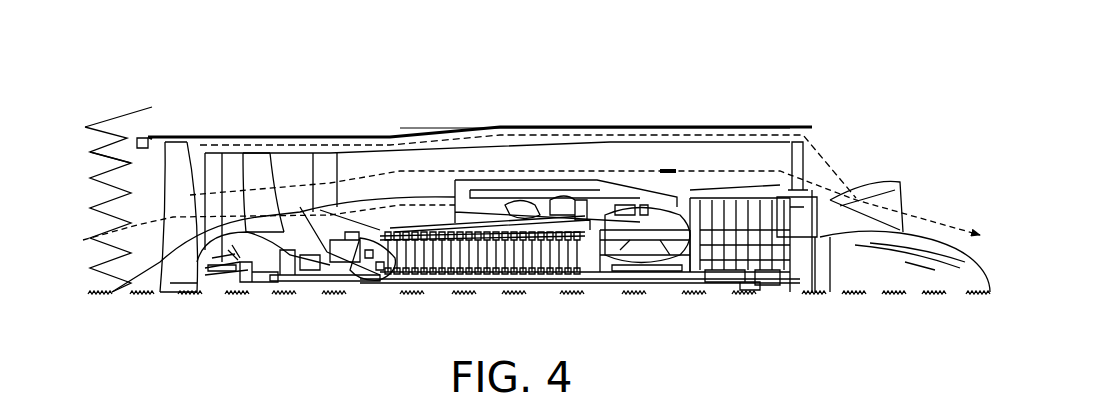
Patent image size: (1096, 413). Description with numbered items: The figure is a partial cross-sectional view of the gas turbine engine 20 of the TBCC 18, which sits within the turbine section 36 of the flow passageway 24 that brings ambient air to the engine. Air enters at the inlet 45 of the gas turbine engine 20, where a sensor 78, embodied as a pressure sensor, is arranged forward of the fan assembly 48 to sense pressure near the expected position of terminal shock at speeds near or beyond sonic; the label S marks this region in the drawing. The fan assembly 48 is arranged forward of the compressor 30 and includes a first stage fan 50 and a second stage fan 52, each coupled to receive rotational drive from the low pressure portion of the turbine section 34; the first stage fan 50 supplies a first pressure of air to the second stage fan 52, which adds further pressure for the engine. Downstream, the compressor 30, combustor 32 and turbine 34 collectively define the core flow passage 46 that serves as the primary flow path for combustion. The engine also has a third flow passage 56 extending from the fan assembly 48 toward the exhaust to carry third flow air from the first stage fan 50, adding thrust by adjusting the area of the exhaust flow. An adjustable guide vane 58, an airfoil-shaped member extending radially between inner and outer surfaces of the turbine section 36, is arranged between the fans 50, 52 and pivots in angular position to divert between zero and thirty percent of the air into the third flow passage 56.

The TBCC 18 is at (932, 100).
The gas turbine engine 20 is at (666, 90).
The flow passageway 24 is at (87, 150).
The spring / inlet section S is at (92, 150).
The compressor section 30 is at (503, 285).
The combustor section 32 is at (632, 286).
The turbine section 34 is at (734, 276).
The turbine section 36 is at (143, 262).
The inlet 45 is at (152, 136).
The core flow passage 46 is at (352, 288).
The fan assembly 48 is at (215, 282).
The first stage fan 50 is at (178, 160).
The second stage fan 52 is at (258, 165).
The third flow passage 56 is at (545, 124).
The adjustable guide vane 58 is at (206, 162).
The sensor 78 is at (141, 137).